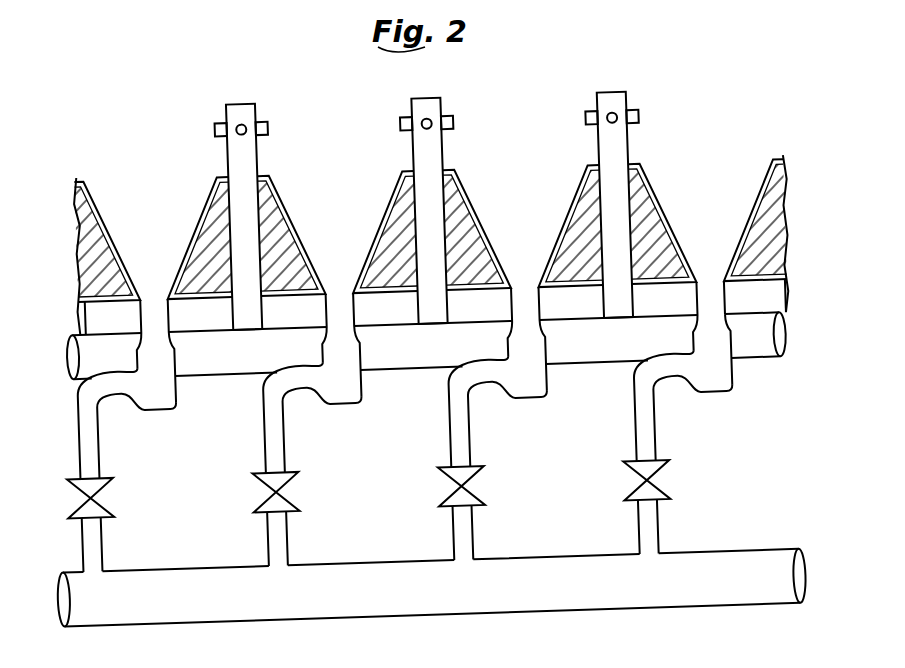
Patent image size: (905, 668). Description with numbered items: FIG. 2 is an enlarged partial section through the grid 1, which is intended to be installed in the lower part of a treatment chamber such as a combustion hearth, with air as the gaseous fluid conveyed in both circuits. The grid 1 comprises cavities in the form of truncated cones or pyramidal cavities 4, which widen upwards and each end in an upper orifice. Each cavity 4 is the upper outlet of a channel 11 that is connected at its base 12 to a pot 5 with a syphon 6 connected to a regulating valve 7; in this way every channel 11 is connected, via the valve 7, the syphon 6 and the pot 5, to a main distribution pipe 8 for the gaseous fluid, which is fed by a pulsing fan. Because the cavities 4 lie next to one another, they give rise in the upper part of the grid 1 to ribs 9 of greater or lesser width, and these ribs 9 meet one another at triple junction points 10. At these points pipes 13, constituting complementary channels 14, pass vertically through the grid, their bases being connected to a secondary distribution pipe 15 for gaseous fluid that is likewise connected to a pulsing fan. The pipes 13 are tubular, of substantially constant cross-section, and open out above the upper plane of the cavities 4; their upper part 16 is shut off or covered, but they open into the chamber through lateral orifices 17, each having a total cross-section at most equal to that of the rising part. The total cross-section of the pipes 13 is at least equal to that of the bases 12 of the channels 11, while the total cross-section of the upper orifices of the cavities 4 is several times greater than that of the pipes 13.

The grid 1 is at (728, 159).
The pyramidal cavity 4 is at (500, 204).
The pot 5 is at (532, 390).
The syphon 6 is at (459, 378).
The regulating valve 7 is at (478, 504).
The main distribution pipe 8 is at (365, 572).
The rib 9 is at (264, 172).
The triple junction point 10 is at (234, 171).
The channel 11 is at (347, 284).
The base of channel 12 is at (333, 318).
The pipe 13 is at (246, 236).
The complementary channel 14 is at (256, 144).
The secondary distribution pipe 15 is at (226, 361).
The upper part of pipe 16 is at (620, 95).
The lateral orifice 17 is at (452, 117).